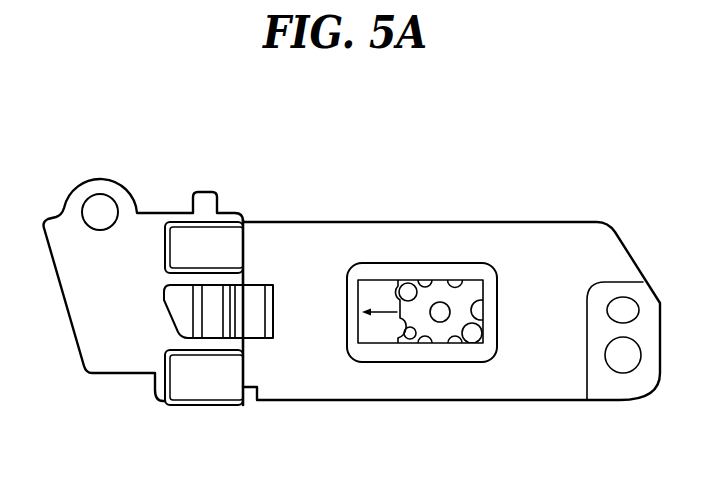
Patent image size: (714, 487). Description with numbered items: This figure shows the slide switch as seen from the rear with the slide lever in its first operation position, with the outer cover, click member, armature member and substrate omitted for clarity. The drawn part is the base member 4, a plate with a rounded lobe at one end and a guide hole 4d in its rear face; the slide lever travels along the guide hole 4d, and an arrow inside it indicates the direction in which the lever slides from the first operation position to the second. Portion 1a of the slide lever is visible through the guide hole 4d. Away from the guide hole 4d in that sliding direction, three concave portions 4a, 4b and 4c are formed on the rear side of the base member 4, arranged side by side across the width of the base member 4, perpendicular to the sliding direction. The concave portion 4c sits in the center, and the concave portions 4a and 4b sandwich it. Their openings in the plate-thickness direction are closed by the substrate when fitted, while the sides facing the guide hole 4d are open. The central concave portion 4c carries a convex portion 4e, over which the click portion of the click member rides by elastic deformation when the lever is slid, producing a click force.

The base member 4 is at (592, 245).
The concave portion 4a is at (225, 240).
The concave portion 4b is at (228, 372).
The concave portion 4c is at (208, 308).
The guide hole 4d is at (382, 332).
The convex portion 4e is at (237, 313).
The filter 1a is at (475, 292).